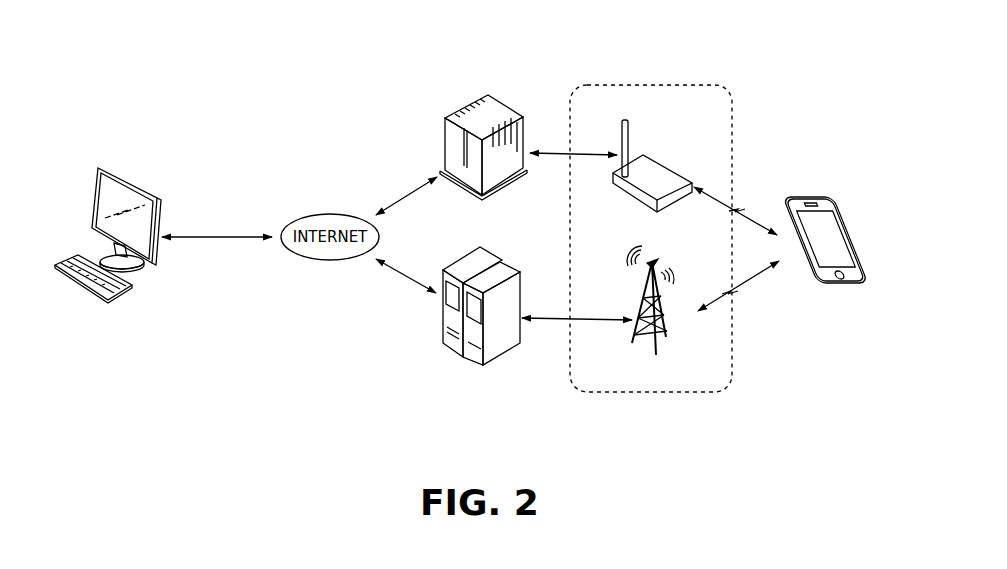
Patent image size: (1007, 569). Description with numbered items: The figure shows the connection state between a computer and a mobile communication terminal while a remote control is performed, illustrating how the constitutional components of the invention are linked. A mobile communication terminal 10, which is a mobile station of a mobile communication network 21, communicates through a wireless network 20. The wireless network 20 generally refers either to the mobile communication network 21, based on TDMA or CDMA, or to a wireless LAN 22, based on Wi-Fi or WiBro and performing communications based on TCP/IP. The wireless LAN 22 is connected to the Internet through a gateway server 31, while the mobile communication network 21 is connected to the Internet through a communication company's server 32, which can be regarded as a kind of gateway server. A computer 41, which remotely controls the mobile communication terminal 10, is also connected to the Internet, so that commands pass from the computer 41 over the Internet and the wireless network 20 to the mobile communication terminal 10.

The mobile communication terminal 10 is at (797, 193).
The wireless network 20 is at (658, 85).
The mobile communication network 21 is at (642, 308).
The wireless LAN 22 is at (653, 167).
The gateway server 31 is at (500, 100).
The communication company's server 32 is at (472, 338).
The computer 41 is at (128, 182).